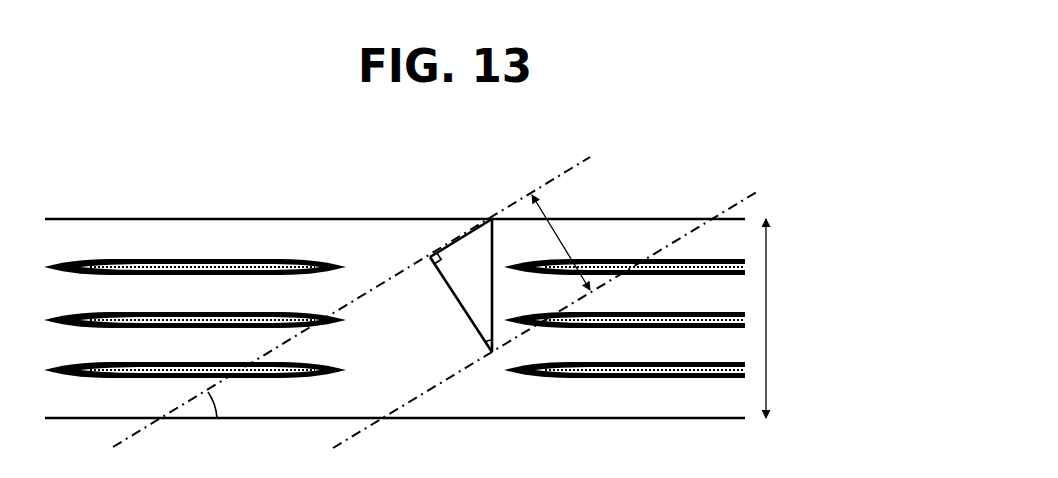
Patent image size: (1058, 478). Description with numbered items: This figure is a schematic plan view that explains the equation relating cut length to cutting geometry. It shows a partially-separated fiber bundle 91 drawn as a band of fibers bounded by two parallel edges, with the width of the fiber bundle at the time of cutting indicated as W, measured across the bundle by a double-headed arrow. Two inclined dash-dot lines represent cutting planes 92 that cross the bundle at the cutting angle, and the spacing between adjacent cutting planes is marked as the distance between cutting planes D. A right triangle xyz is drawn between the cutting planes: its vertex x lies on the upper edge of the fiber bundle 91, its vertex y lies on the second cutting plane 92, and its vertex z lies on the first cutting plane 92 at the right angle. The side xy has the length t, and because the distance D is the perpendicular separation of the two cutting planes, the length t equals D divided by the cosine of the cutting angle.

The partially-separated fiber bundle 91 is at (106, 216).
The cutting plane 92 is at (383, 283).
The length of side xy t is at (484, 285).
The point x is at (461, 226).
The point y is at (463, 318).
The point z is at (430, 250).
The distance between cutting planes D is at (557, 243).
The width of fiber bundle W is at (834, 318).